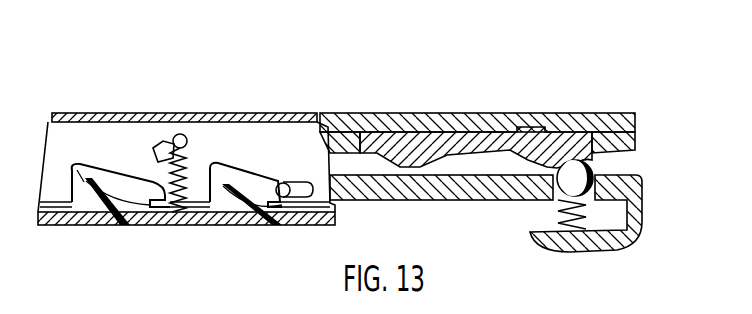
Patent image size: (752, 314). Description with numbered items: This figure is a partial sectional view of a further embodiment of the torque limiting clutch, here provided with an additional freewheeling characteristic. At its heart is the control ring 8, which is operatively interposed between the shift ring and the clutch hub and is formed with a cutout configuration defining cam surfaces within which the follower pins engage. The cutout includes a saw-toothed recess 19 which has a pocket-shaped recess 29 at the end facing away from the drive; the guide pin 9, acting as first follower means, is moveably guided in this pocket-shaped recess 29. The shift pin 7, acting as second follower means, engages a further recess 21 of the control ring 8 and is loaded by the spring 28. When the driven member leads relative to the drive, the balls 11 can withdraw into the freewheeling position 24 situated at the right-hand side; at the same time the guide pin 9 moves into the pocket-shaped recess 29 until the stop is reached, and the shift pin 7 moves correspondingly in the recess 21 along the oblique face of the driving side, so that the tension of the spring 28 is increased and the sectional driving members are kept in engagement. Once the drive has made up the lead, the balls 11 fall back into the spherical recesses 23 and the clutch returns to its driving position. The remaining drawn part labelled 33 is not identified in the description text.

The control ring 8 is at (80, 138).
The first latch member 33 is at (170, 150).
The recess 21 is at (166, 143).
The shift pin 7 is at (185, 136).
The spring 28 is at (167, 225).
The saw-toothed recess 19 is at (250, 180).
The pocket-shaped recess 29 is at (302, 186).
The guide pin 9 is at (282, 196).
The freewheeling position 24 is at (622, 127).
The spherical recess 23 is at (537, 125).
The ball 11 is at (573, 172).